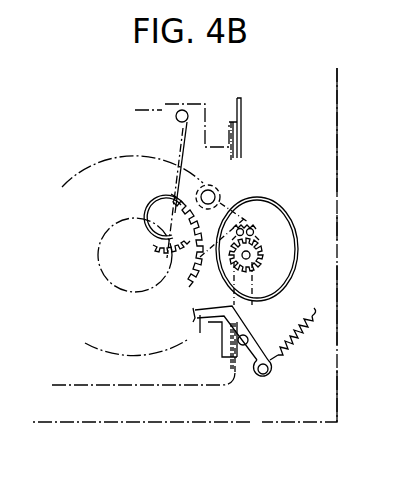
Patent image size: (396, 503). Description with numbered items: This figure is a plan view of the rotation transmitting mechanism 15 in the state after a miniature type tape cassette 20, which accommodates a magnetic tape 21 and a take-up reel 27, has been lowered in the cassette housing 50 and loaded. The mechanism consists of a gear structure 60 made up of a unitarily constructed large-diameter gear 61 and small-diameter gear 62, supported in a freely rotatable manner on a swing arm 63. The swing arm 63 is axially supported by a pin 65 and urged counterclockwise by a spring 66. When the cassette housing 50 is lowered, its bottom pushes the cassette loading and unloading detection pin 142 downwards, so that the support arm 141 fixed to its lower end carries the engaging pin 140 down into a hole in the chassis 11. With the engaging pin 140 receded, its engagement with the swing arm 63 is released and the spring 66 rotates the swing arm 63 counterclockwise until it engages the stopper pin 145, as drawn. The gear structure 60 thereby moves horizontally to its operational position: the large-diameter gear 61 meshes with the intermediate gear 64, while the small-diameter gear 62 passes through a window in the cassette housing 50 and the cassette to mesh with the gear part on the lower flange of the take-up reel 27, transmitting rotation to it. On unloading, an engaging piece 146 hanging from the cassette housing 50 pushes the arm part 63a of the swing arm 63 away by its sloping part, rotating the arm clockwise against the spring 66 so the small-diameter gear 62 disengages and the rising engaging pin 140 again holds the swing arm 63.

The chassis 11 is at (333, 380).
The rotation transmitting mechanism 15 is at (253, 70).
The miniature type tape cassette 20 is at (131, 383).
The magnetic tape 21 is at (185, 137).
The take-up reel 27 is at (107, 158).
The cassette housing 50 is at (246, 143).
The gear structure 60 is at (274, 197).
The large-diameter gear 61 is at (292, 243).
The small-diameter gear 62 is at (262, 260).
The swing arm 63 is at (260, 313).
The arm part 63a is at (200, 308).
The intermediate gear 64 is at (150, 203).
The pin 65 is at (260, 378).
The spring 66 is at (290, 348).
The engaging pin 140 is at (262, 214).
The support arm 141 is at (226, 196).
The cassette loading and unloading detection pin 142 is at (208, 190).
The stopper pin 145 is at (204, 243).
The engaging piece 146 is at (207, 345).